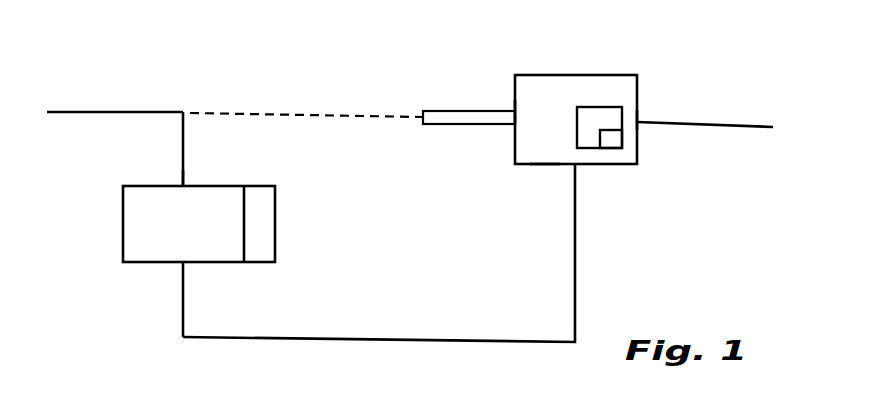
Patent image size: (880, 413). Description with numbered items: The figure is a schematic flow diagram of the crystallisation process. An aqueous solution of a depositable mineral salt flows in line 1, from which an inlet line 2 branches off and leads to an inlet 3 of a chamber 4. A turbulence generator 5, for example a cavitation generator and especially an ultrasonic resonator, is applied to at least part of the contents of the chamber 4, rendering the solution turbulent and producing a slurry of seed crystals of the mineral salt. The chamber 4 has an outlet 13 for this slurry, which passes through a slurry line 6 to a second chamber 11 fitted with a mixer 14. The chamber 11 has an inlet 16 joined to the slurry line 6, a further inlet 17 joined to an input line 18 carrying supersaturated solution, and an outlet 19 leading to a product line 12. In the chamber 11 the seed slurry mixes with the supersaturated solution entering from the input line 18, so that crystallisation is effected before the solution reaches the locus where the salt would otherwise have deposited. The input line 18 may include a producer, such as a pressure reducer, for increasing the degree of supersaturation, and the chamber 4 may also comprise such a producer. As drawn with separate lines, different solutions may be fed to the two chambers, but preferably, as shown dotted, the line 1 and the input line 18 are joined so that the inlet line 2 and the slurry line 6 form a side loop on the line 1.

The line 1 is at (110, 111).
The inlet line 2 is at (183, 143).
The inlet 3 is at (183, 186).
The chamber 4 is at (168, 222).
The turbulence generator 5 is at (260, 228).
The slurry line 6 is at (577, 285).
The chamber 11 is at (577, 90).
The product line 12 is at (746, 125).
The outlet 13 is at (183, 263).
The mixer 14 is at (609, 143).
The inlet 16 is at (545, 166).
The inlet 17 is at (515, 112).
The input line 18 is at (455, 111).
The outlet 19 is at (638, 122).